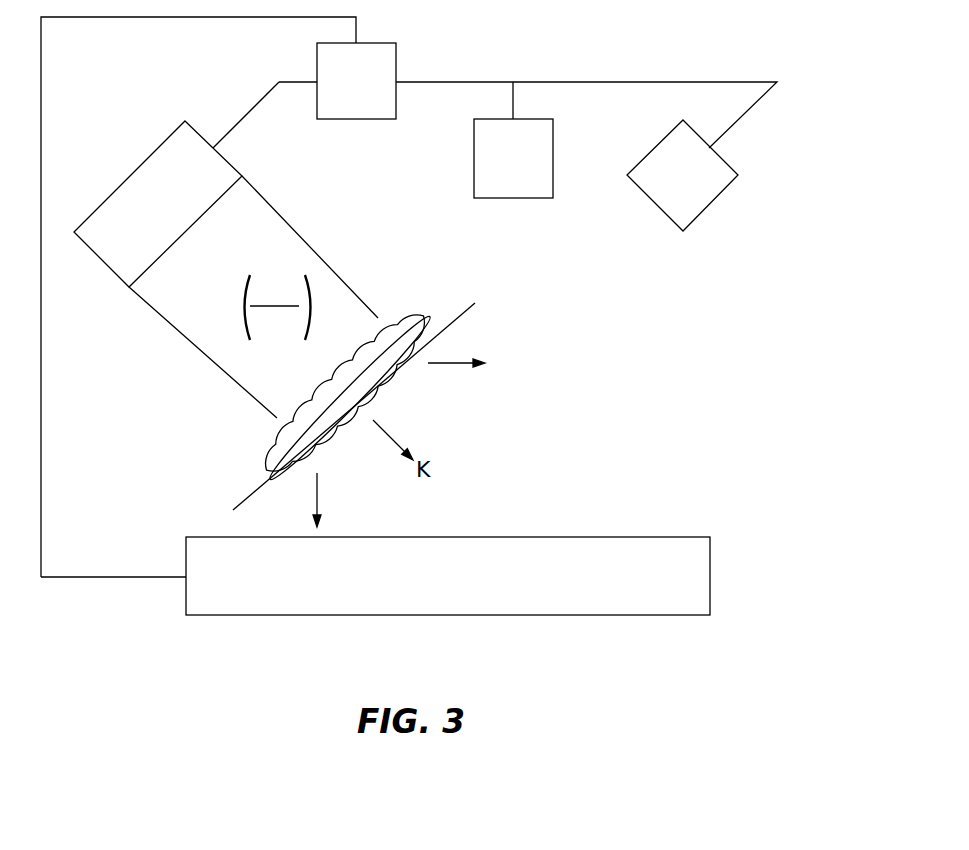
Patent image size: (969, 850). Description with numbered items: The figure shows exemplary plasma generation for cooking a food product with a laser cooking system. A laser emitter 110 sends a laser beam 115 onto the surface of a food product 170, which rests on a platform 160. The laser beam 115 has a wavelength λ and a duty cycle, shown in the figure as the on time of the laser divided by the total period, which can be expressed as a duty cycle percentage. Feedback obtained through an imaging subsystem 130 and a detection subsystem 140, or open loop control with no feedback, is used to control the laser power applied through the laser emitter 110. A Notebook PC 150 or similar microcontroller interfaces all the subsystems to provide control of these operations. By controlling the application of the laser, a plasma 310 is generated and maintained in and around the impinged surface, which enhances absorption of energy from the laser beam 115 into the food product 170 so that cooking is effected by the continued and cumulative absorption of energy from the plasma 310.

The laser emitter 110 is at (102, 263).
The laser beam 115 is at (317, 255).
The imaging subsystem 130 is at (710, 203).
The detection subsystem 140 is at (553, 157).
The Notebook PC 150 is at (357, 120).
The platform 160 is at (462, 615).
The food product 170 is at (447, 312).
The plasma 310 is at (340, 433).